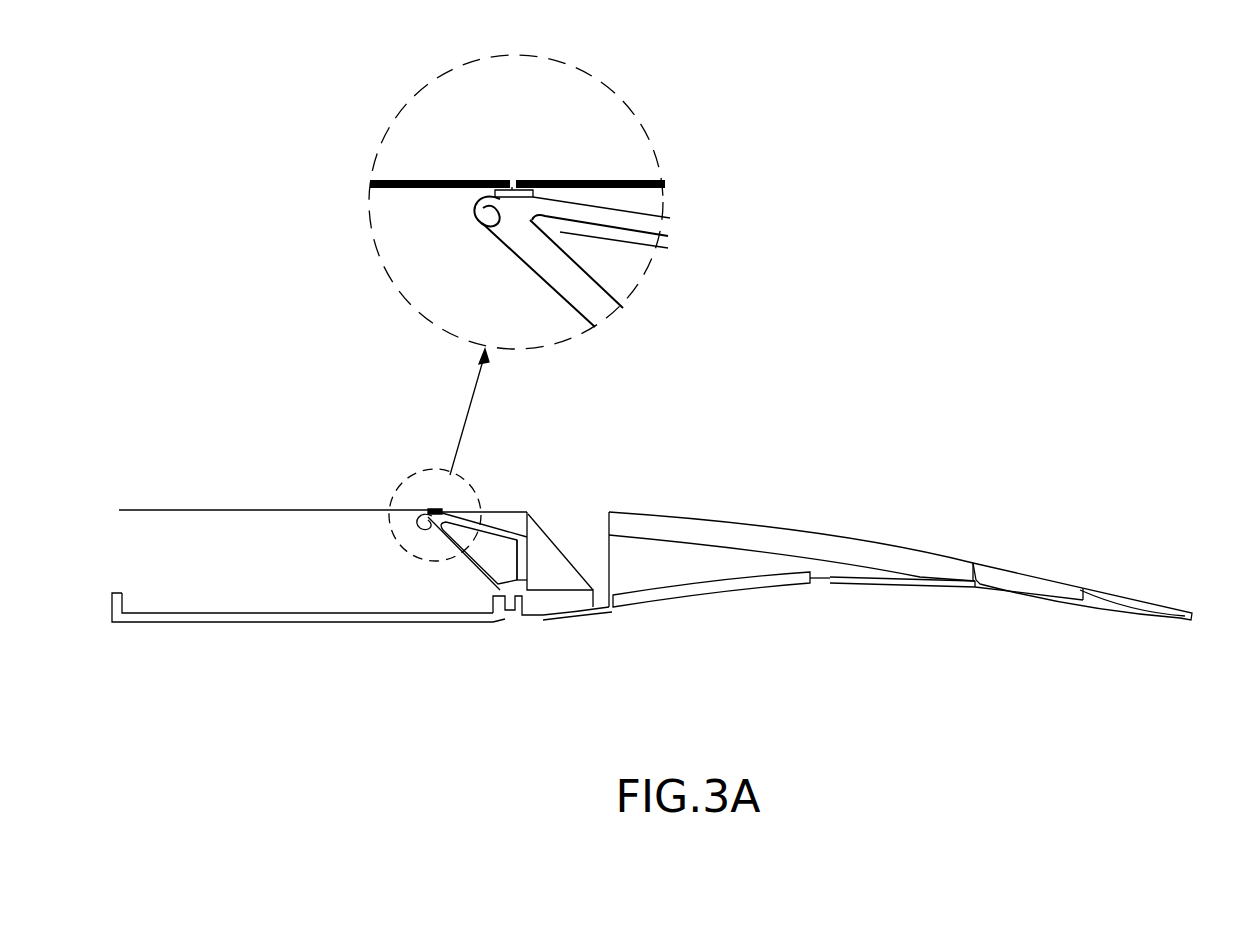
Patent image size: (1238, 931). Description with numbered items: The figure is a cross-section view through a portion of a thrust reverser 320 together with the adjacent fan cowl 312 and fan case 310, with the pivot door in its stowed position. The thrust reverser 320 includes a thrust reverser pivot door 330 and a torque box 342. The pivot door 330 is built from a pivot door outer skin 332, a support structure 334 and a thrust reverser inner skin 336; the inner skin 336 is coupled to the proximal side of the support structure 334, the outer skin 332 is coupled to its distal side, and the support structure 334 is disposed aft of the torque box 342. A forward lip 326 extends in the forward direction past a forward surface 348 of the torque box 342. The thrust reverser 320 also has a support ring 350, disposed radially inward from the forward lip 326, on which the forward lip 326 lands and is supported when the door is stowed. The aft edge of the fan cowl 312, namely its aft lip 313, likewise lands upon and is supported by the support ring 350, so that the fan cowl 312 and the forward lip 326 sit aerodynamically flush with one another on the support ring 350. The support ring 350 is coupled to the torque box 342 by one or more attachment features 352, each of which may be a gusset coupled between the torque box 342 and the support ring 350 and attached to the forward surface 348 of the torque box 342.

The fan case 310 is at (237, 617).
The fan cowl 312 is at (380, 509).
The aft lip 313 is at (502, 180).
The thrust reverser 320 is at (1000, 420).
The forward lip 326 is at (495, 509).
The thrust reverser pivot door 330 is at (772, 540).
The pivot door outer skin 332 is at (668, 513).
The support structure 334 is at (840, 547).
The thrust reverser inner skin 336 is at (816, 587).
The torque box 342 is at (560, 586).
The forward surface 348 is at (525, 572).
The support ring 350 is at (428, 525).
The attachment feature 352 is at (469, 566).